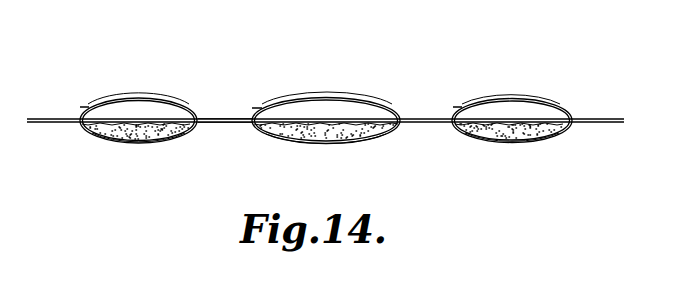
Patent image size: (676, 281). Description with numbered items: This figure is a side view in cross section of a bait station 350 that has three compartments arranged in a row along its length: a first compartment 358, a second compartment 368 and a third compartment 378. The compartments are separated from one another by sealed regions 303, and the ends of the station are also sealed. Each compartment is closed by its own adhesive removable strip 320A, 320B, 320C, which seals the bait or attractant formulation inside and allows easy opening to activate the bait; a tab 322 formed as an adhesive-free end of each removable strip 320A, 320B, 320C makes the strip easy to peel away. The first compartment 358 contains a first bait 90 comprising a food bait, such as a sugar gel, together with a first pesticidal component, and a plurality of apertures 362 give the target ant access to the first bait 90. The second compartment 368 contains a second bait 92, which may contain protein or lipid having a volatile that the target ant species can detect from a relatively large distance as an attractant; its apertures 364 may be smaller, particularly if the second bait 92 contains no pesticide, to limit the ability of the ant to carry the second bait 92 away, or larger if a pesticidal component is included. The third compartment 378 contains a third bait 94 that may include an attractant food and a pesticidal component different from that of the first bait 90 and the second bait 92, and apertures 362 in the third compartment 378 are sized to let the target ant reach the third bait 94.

The bait station 350 is at (597, 77).
The adhesive removable strip 320A is at (132, 116).
The adhesive removable strip 320B is at (322, 115).
The adhesive removable strip 320C is at (524, 117).
The tab 322 is at (86, 106).
The apertures 362 is at (167, 100).
The apertures 364 is at (325, 98).
The first bait 90 is at (102, 130).
The second bait 92 is at (282, 130).
The third bait 94 is at (555, 133).
The sealed regions 303 is at (222, 127).
The first compartment 358 is at (130, 147).
The second compartment 368 is at (308, 148).
The third compartment 378 is at (528, 148).